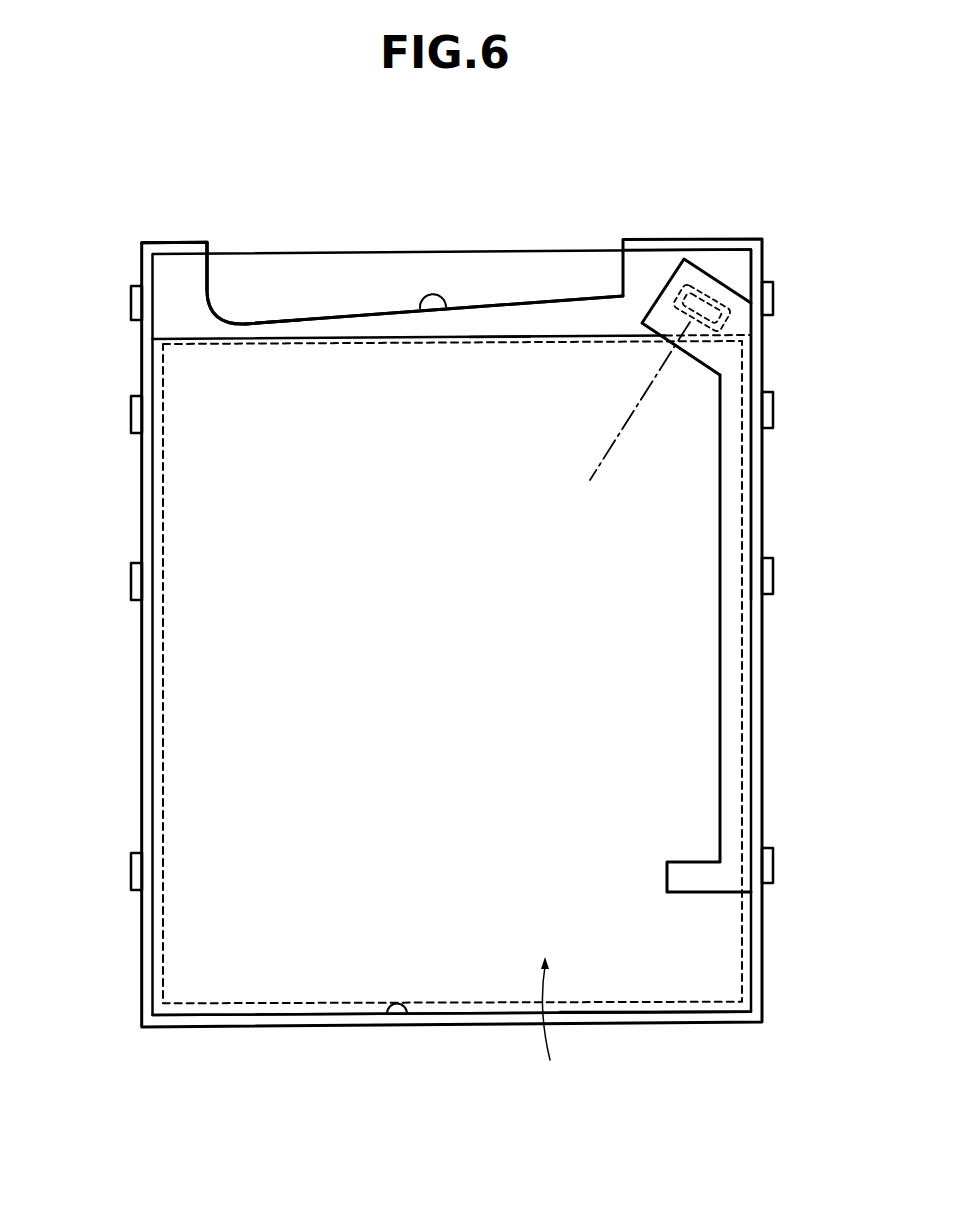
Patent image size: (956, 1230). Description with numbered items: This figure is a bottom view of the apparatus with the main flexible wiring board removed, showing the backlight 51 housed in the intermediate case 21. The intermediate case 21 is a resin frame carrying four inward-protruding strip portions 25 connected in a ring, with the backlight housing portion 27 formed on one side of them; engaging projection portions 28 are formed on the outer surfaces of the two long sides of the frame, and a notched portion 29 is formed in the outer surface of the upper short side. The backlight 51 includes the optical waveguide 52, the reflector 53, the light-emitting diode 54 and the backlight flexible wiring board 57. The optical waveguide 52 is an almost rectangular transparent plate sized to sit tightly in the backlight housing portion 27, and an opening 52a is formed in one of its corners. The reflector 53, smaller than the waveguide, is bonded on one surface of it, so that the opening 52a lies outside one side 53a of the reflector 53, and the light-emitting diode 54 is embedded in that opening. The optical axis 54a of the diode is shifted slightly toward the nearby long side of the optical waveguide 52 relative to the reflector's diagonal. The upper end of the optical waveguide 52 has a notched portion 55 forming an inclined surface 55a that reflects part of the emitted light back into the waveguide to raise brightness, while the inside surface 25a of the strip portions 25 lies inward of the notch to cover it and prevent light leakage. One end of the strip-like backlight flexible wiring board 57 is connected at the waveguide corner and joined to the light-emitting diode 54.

The intermediate case 21 is at (735, 232).
The strip portions 25 is at (368, 327).
The inside surface of the strip portions 25a is at (500, 345).
The backlight housing portion 27 is at (406, 1012).
The engaging projection portions 28 is at (131, 302).
The notched portion 29 is at (207, 240).
The backlight 51 is at (547, 1024).
The optical waveguide 52 is at (738, 268).
The opening 52a is at (705, 297).
The reflector 53 is at (670, 993).
The one side of the reflector 53a is at (498, 338).
The light-emitting diode 54 is at (676, 290).
The optical axis 54a is at (603, 458).
The notched portion 55 is at (441, 300).
The inclined surface 55a is at (290, 318).
The backlight flexible wiring board 57 is at (720, 722).